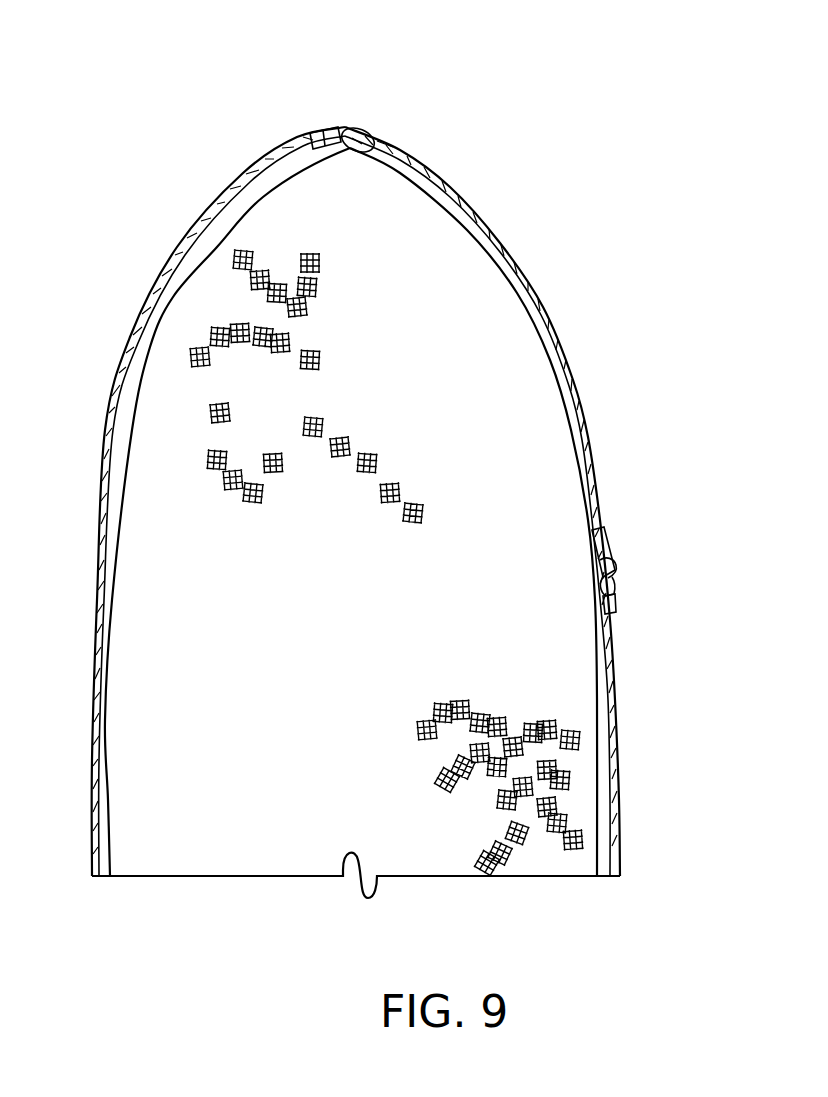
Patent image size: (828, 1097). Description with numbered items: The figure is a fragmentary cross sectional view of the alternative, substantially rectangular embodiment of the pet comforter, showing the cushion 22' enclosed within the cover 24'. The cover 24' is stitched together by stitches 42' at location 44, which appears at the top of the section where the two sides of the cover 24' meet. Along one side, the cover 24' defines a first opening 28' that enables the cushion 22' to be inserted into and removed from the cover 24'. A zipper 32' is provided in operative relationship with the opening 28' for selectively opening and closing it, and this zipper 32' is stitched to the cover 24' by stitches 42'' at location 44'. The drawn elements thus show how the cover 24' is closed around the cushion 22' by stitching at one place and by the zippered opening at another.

The cushion 22' is at (356, 914).
The cover 24' is at (331, 501).
The first opening 28' is at (648, 540).
The zipper 32' is at (638, 506).
The stitches 42' is at (309, 80).
The stitches 42'' is at (652, 644).
The location 44 is at (395, 130).
The location 44' is at (648, 587).